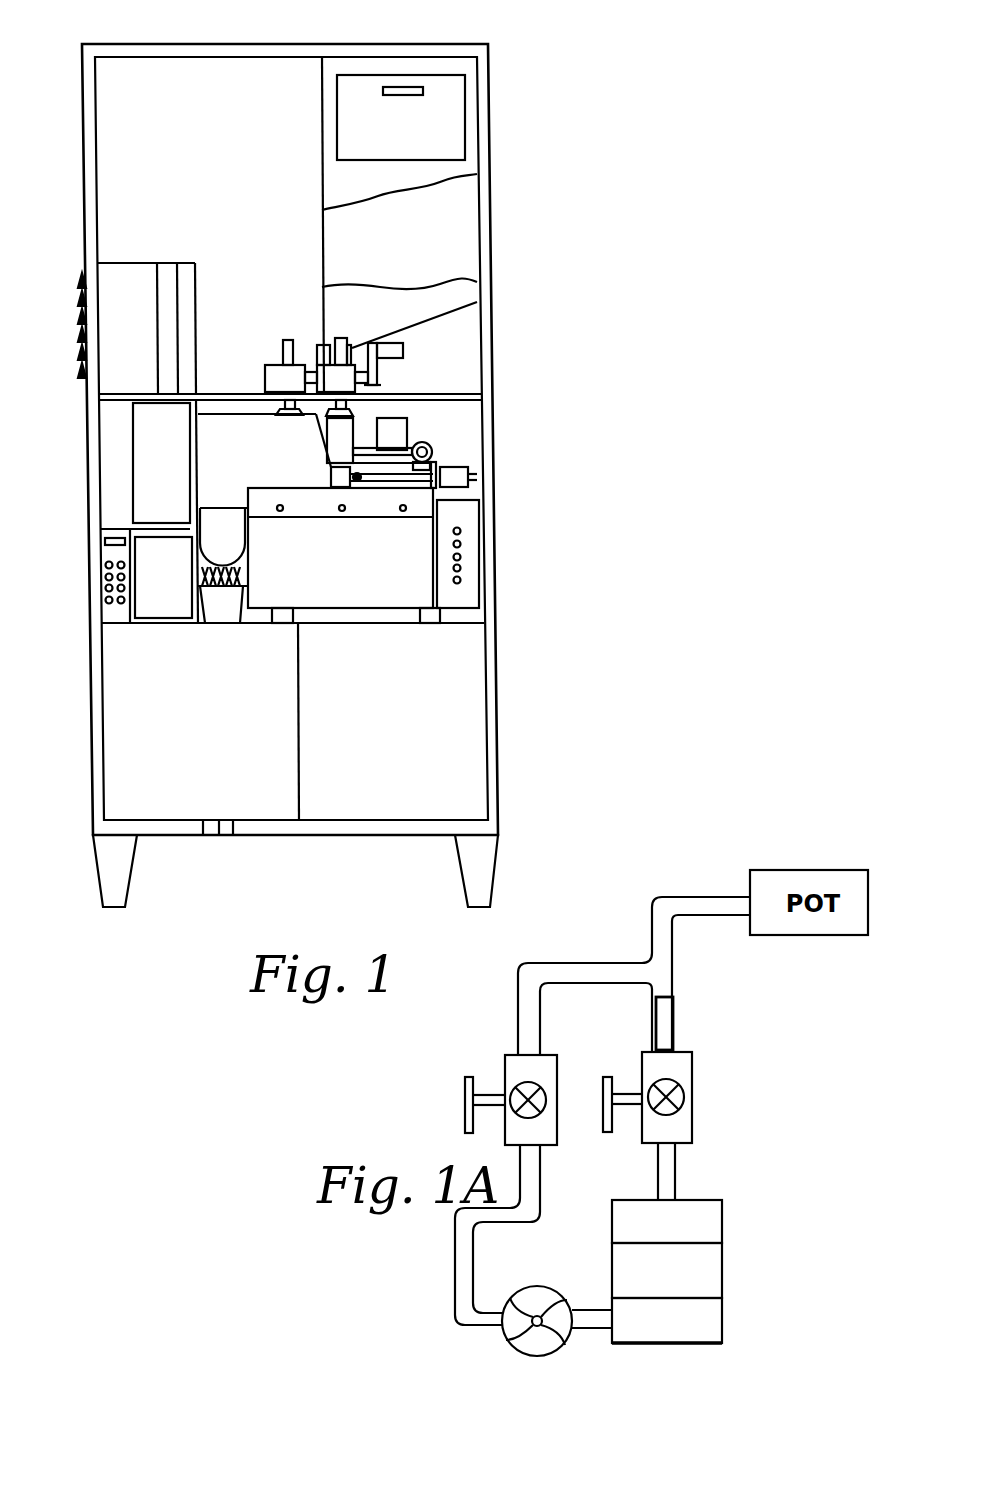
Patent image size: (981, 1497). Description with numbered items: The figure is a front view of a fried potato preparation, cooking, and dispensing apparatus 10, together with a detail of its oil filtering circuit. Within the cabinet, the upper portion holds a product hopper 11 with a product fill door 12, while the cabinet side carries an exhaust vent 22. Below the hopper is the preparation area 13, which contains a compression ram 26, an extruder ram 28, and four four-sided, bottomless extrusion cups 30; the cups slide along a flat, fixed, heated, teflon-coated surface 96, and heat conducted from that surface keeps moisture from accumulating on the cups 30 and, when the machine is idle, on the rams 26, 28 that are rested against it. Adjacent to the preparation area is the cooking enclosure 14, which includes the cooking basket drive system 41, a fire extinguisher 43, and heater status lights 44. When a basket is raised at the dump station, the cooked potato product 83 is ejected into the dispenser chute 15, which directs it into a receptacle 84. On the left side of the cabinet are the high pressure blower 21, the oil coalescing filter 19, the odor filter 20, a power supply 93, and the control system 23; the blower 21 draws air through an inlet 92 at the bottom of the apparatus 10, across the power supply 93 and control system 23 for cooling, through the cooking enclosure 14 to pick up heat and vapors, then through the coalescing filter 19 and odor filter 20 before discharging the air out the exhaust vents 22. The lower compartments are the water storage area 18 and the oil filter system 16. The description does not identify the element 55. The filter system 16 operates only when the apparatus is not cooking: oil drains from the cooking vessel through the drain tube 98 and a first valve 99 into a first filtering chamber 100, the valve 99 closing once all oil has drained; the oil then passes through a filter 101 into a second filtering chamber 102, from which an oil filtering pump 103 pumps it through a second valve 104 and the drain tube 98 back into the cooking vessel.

In FIG. 1, the fried potato preparation, cooking, and dispensing apparatus 10 is at (562, 47).
In FIG. 1, the product hopper 11 is at (434, 222).
In FIG. 1, the product fill door 12 is at (371, 90).
In FIG. 1, the preparation area 13 is at (483, 403).
In FIG. 1, the cooking enclosure 14 is at (385, 595).
In FIG. 1, the dispenser chute 15 is at (234, 540).
In FIG. 1, the oil filter system 16 is at (408, 720).
In FIG. 1, the water storage area 18 is at (210, 720).
In FIG. 1, the oil coalescing filter 19 is at (185, 270).
In FIG. 1, the odor filter 20 is at (167, 273).
In FIG. 1, the high pressure blower 21 is at (130, 273).
In FIG. 1, the exhaust vent 22 is at (74, 362).
In FIG. 1, the control system 23 is at (153, 562).
In FIG. 1, the compression ram 26 is at (273, 410).
In FIG. 1, the extruder ram 28 is at (388, 403).
In FIG. 1, the extrusion cups 30 is at (327, 428).
In FIG. 1, the cooking basket drive system 41 is at (470, 483).
In FIG. 1, the fire extinguisher 43 is at (432, 448).
In FIG. 1, the heater status lights 44 is at (463, 565).
In FIG. 1, the partition 55 is at (336, 307).
In FIG. 1, the cooked potato product 83 is at (244, 578).
In FIG. 1, the receptacle 84 is at (224, 612).
In FIG. 1, the inlet 92 is at (150, 623).
In FIG. 1, the power supply 93 is at (88, 504).
In FIG. 1, the surface 96 is at (383, 467).
In FIG. 1A, the drain tube 98 is at (677, 1020).
In FIG. 1A, the first valve 99 is at (693, 1092).
In FIG. 1A, the first filtering chamber 100 is at (722, 1228).
In FIG. 1A, the filter 101 is at (722, 1275).
In FIG. 1A, the second filtering chamber 102 is at (722, 1323).
In FIG. 1A, the oil filtering pump 103 is at (514, 1350).
In FIG. 1A, the second valve 104 is at (547, 1147).